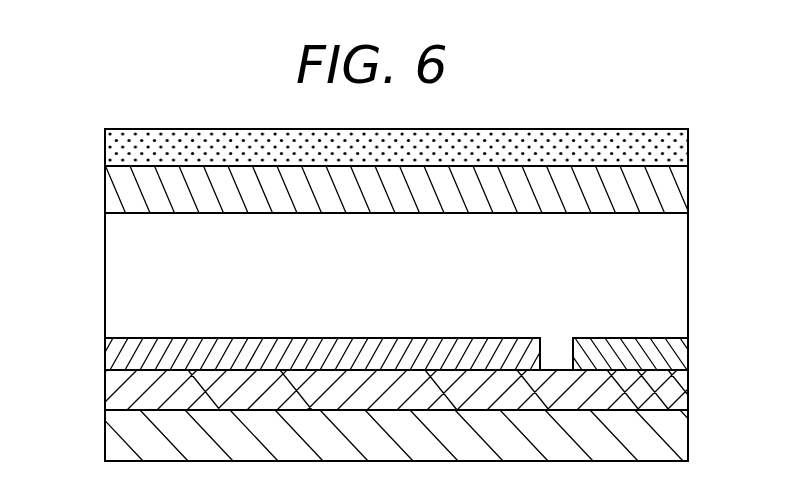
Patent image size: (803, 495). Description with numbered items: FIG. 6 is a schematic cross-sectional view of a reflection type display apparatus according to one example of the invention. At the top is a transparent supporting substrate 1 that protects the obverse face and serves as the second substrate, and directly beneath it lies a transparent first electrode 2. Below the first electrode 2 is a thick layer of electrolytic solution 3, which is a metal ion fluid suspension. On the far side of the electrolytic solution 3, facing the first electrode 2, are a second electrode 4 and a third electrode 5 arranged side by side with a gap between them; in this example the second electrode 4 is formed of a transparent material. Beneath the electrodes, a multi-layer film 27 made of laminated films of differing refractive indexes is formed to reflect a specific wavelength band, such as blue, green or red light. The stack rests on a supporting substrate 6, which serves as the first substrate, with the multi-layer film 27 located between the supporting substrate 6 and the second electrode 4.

The transparent supporting substrate 1 is at (116, 147).
The first electrode 2 is at (113, 193).
The electrolytic solution 3 is at (116, 281).
The second electrode 4 is at (113, 355).
The third electrode 5 is at (680, 353).
The multi-layer film 27 is at (113, 392).
The supporting substrate 6 is at (114, 437).